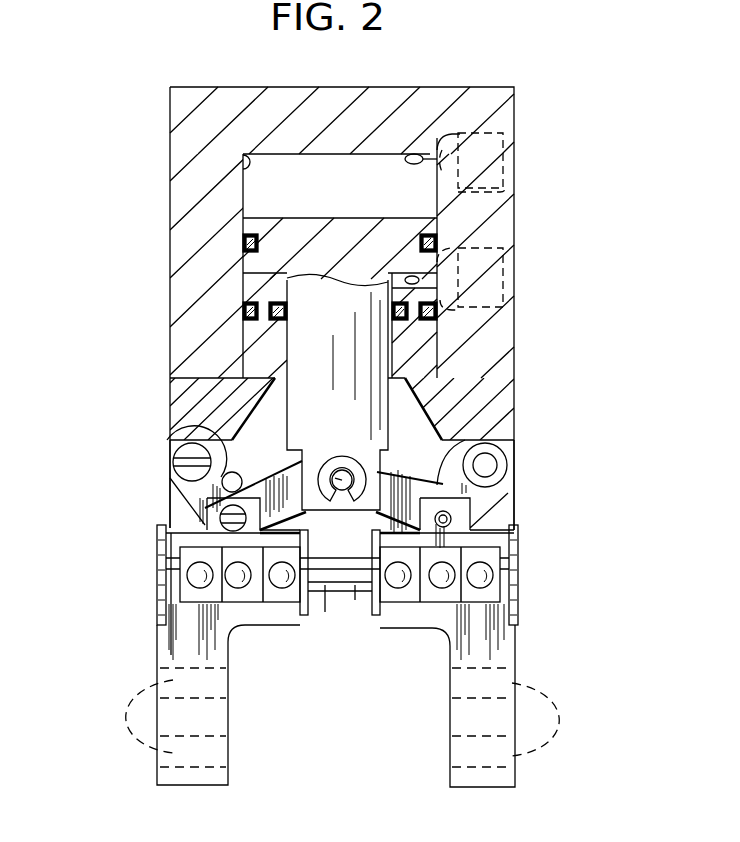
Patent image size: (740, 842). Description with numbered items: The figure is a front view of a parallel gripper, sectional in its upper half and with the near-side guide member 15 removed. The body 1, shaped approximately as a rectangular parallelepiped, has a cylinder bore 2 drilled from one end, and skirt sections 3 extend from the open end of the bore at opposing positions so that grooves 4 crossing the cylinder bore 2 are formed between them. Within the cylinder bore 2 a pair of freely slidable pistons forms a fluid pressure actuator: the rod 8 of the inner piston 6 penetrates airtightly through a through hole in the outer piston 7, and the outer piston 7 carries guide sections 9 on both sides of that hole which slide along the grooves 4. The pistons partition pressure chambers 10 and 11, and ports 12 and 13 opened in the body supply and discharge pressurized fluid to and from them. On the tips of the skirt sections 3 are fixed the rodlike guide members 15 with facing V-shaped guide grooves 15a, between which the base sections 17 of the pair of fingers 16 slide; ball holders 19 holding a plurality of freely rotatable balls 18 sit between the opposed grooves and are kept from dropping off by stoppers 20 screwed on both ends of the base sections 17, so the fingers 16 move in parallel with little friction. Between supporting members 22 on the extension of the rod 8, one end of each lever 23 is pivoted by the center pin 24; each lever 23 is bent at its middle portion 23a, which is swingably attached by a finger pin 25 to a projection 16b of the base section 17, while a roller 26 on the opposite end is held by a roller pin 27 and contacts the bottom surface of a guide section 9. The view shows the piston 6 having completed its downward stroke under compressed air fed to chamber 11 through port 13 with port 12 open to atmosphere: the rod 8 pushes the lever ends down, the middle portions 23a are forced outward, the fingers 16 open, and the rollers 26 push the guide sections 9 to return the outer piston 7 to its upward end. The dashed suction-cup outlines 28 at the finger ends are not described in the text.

The body 1 is at (240, 97).
The cylinder bore 2 is at (243, 176).
The pressure chamber 11 is at (268, 168).
The port 13 is at (512, 181).
The port 12 is at (515, 276).
The inner piston 6 is at (258, 232).
The pressure chamber 10 is at (258, 280).
The outer piston 7 is at (262, 330).
The rod 8 is at (310, 346).
The guide section 9 is at (183, 406).
The groove 4 is at (515, 392).
The skirt section 3 is at (177, 508).
The bent middle portion 23a is at (176, 498).
The lever 23 is at (482, 505).
The roller 26 is at (200, 461).
The roller pin 27 is at (222, 479).
The finger pin 25 is at (233, 530).
The supporting member 22 is at (380, 474).
The center pin 24 is at (313, 466).
The projection 16b is at (163, 547).
The base section 17 is at (163, 586).
The stopper 20 is at (160, 606).
The ball 18 is at (402, 584).
The ball holder 19 is at (444, 584).
The guide member 15 is at (307, 622).
The guide groove 15a is at (326, 600).
The finger 16 is at (230, 776).
The suction cup 28 is at (135, 721).